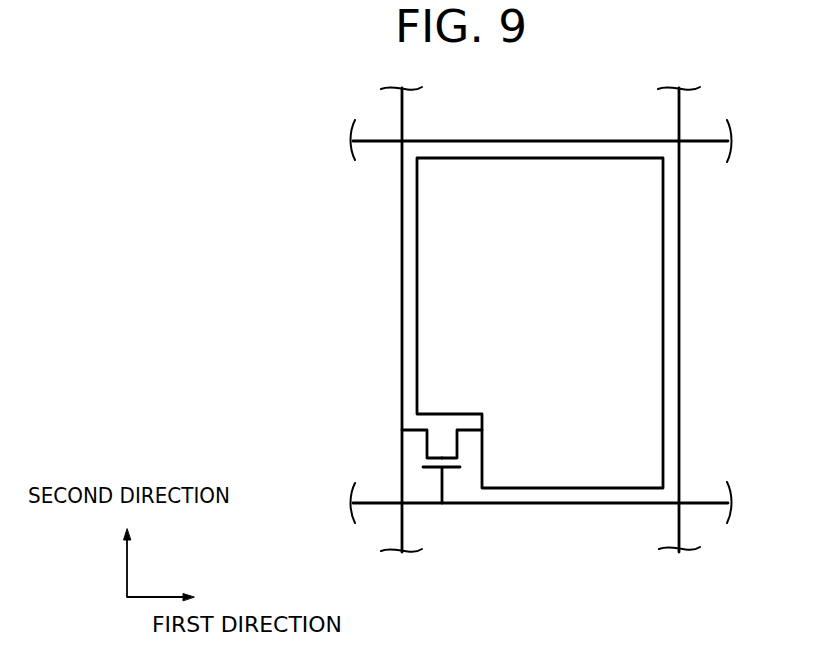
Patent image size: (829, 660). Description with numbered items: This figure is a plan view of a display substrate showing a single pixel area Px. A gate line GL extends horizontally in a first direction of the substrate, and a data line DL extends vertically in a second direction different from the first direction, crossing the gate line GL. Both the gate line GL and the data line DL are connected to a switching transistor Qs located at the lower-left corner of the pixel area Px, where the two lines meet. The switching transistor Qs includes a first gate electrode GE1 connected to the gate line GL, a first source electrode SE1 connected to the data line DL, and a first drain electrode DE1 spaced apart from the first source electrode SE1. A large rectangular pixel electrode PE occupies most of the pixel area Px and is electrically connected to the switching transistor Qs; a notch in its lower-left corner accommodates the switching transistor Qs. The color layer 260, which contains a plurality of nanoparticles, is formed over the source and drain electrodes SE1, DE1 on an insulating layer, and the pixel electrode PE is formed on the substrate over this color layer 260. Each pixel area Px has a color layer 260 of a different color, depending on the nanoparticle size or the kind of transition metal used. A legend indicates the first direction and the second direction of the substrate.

The pixel electrode PE is at (641, 215).
The color layer 260 is at (638, 277).
The data line DL is at (679, 363).
The gate line GL is at (703, 501).
The pixel area Px is at (557, 242).
The first source electrode SE1 is at (408, 431).
The first gate electrode GE1 is at (443, 481).
The first drain electrode DE1 is at (467, 431).
The switching transistor Qs is at (542, 600).